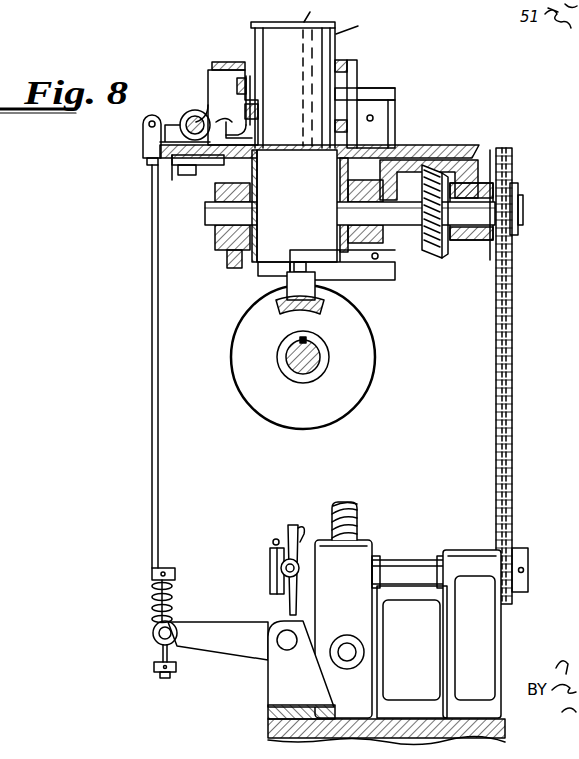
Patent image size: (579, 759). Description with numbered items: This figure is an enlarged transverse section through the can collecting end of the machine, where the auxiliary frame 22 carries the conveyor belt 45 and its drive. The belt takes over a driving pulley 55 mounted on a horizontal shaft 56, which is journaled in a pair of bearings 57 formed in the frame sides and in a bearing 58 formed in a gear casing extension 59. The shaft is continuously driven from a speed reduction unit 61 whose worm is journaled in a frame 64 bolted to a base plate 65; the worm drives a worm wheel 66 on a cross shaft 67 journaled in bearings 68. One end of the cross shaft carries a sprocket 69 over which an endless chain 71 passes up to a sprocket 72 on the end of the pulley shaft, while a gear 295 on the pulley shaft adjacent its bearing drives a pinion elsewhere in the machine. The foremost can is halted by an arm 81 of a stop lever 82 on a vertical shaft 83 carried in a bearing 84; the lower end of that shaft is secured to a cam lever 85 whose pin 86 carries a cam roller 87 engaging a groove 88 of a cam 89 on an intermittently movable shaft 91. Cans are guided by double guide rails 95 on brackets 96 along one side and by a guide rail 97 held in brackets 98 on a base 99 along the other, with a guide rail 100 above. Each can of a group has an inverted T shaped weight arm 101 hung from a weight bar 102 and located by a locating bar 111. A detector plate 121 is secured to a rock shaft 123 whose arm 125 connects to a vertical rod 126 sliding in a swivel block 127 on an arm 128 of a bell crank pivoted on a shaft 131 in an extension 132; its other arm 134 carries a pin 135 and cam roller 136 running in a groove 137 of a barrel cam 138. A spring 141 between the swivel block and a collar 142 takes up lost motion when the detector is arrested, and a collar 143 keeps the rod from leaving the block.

The auxiliary frame 22 is at (382, 148).
The conveyor belt 45 is at (320, 205).
The driving pulley 55 is at (262, 212).
The horizontal shaft 56 is at (212, 216).
The bearings 57 is at (222, 242).
The bearing 58 is at (474, 232).
The gear casing extension 59 is at (456, 146).
The speed reduction unit 61 is at (366, 514).
The frame 64 is at (376, 686).
The base plate 65 is at (270, 728).
The worm wheel 66 is at (346, 504).
The cross shaft 67 is at (412, 568).
The bearings 68 is at (464, 560).
The sprocket 69 is at (522, 562).
The endless chain 71 is at (516, 324).
The sprocket 72 is at (514, 192).
The arm 81 is at (342, 98).
The stop lever 82 is at (386, 112).
The vertical shaft 83 is at (380, 88).
The bearing 84 is at (384, 170).
The cam lever 85 is at (350, 272).
The pin 86 is at (300, 262).
The cam roller 87 is at (314, 298).
The groove 88 is at (274, 297).
The cam 89 is at (234, 362).
The intermittently movable shaft 91 is at (318, 360).
The guide rails 95 is at (346, 62).
The brackets 96 is at (358, 72).
The guide rail 97 is at (262, 110).
The brackets 98 is at (224, 96).
The base 99 is at (193, 174).
The guide rail 100 is at (259, 56).
The weight arm 101 is at (252, 88).
The weight bar 102 is at (238, 84).
The locating bar 111 is at (226, 64).
The detector plate 121 is at (228, 122).
The rock shaft 123 is at (190, 120).
The arm 125 is at (147, 120).
The vertical rod 126 is at (152, 326).
The swivel block 127 is at (153, 632).
The arm 128 is at (218, 641).
The shaft 131 is at (287, 650).
The extension 132 is at (270, 693).
The arm 134 is at (290, 600).
The pin 135 is at (280, 566).
The cam roller 136 is at (272, 548).
The groove 137 is at (294, 522).
The barrel cam 138 is at (272, 540).
The spring 141 is at (152, 592).
The collar 142 is at (152, 574).
The collar 143 is at (154, 668).
The gear 295 is at (436, 258).